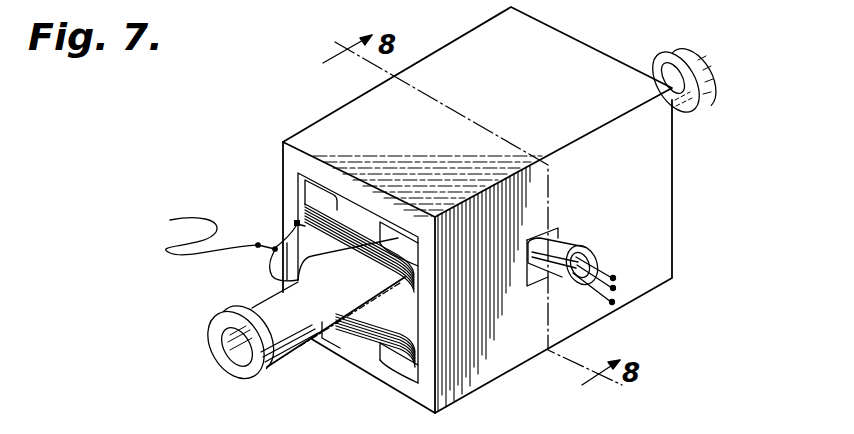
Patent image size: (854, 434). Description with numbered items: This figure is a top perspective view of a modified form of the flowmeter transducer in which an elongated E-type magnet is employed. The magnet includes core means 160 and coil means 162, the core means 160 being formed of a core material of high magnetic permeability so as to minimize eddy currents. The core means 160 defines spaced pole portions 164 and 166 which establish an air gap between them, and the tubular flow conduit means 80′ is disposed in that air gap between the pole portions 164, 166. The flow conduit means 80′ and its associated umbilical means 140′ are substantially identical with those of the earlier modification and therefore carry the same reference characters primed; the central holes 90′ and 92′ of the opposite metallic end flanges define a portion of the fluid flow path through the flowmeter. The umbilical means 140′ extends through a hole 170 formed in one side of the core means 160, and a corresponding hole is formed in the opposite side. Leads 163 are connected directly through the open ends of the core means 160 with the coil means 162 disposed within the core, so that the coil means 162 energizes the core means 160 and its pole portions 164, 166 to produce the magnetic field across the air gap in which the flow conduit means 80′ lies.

The core means 160 is at (598, 43).
The coil means 162 is at (296, 223).
The leads 163 is at (206, 234).
The pole portion 164 is at (367, 222).
The pole portion 166 is at (362, 345).
The hole 170 is at (540, 285).
The umbilical means 140′ is at (586, 239).
The flow conduit means 80′ is at (250, 301).
The central hole 90′ is at (248, 375).
The central hole 92′ is at (712, 88).